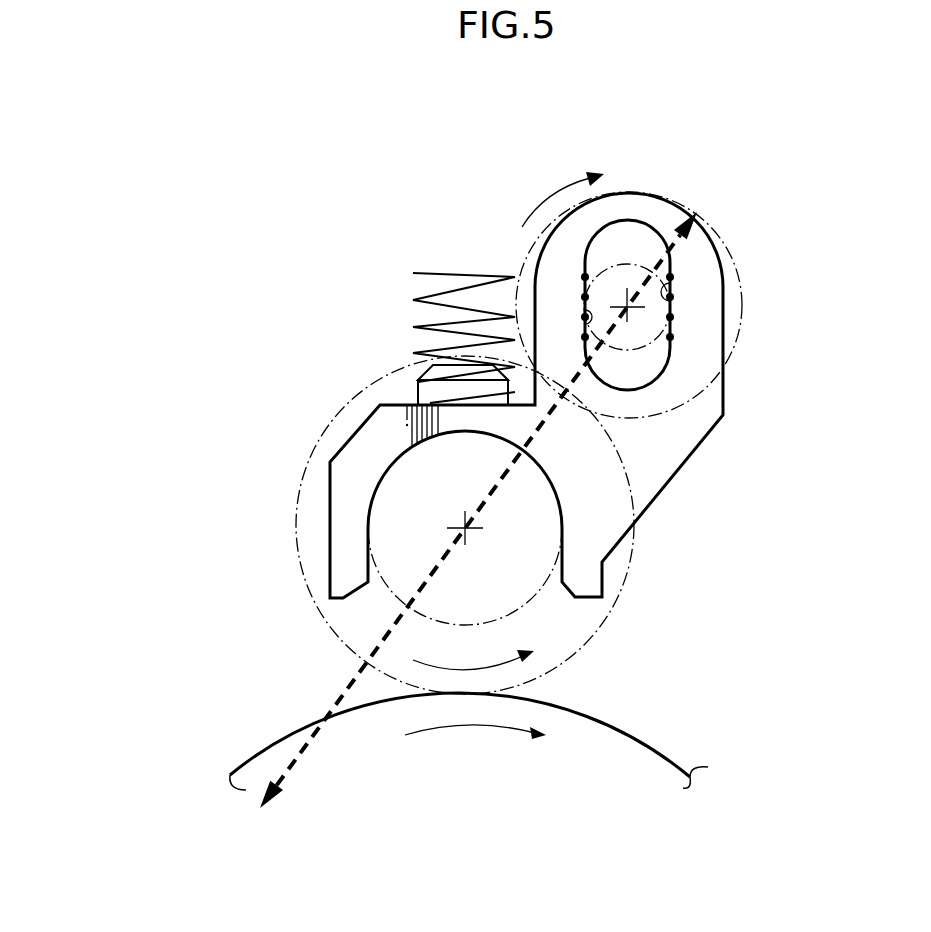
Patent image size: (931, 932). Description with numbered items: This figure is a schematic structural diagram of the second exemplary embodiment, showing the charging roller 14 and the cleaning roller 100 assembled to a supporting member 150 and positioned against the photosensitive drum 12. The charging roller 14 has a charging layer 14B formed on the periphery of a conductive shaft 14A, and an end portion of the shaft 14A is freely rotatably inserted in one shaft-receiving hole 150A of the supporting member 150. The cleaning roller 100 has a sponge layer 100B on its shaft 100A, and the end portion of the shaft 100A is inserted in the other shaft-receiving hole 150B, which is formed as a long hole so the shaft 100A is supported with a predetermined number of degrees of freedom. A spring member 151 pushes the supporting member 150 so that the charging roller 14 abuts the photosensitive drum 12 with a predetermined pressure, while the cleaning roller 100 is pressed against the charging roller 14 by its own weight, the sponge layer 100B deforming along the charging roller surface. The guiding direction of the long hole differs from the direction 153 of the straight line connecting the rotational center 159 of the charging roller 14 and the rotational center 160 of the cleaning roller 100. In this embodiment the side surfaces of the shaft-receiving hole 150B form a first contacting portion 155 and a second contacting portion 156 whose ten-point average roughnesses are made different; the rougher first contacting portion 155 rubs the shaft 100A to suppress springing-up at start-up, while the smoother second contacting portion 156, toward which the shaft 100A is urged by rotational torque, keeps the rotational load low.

The photosensitive drum 12 is at (663, 750).
The charging roller 14 is at (150, 490).
The shaft 14A is at (397, 545).
The charging layer 14B is at (297, 520).
The cleaning roller 100 is at (585, 117).
The shaft 100A is at (608, 258).
The sponge layer 100B is at (535, 258).
The supporting member 150 is at (653, 470).
The shaft-receiving hole 150A is at (377, 490).
The shaft-receiving hole 150B is at (648, 226).
The spring member 151 is at (432, 292).
The direction of a straight line 153 is at (322, 712).
The first contacting portion 155 is at (650, 280).
The second contacting portion 156 is at (590, 327).
The rotational center 159 is at (472, 536).
The rotational center 160 is at (600, 330).